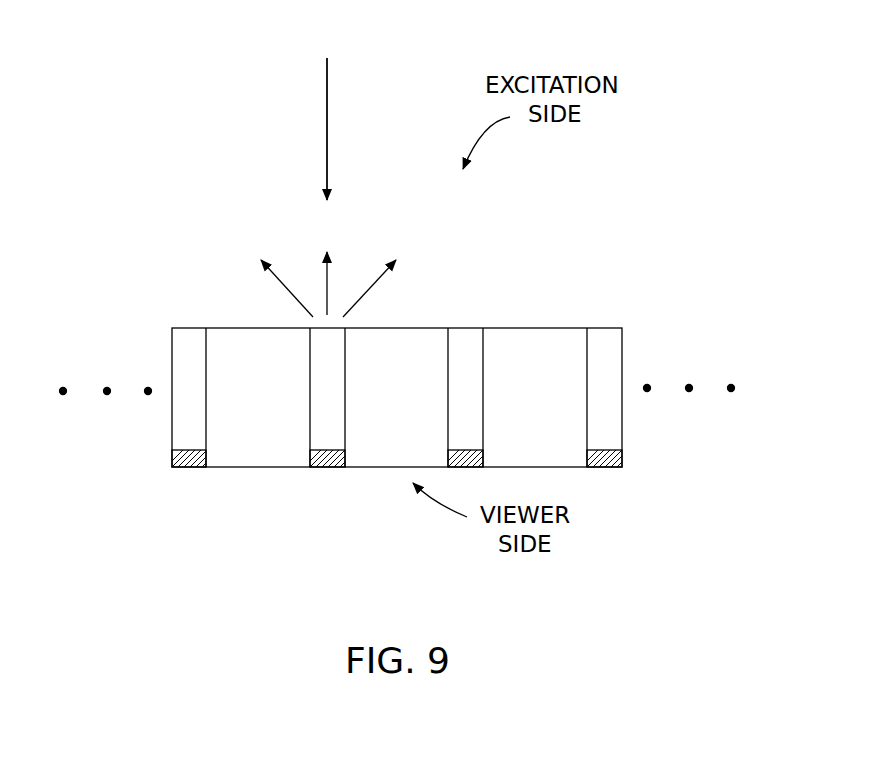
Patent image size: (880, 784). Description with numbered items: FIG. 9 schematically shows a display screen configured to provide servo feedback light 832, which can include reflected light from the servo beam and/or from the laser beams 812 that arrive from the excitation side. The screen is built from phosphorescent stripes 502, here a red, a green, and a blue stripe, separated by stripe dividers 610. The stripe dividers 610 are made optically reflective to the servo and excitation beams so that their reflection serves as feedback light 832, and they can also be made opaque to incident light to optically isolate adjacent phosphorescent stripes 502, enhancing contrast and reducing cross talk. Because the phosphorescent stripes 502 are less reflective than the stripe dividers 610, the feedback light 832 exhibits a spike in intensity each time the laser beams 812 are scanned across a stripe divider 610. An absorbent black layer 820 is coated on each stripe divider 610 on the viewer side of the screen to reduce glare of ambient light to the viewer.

The phosphorescent stripe 502 is at (227, 353).
The stripe divider 610 is at (185, 328).
The absorbent black layer 820 is at (172, 458).
The servo feedback light 832 is at (367, 290).
The laser beams 812 is at (327, 88).